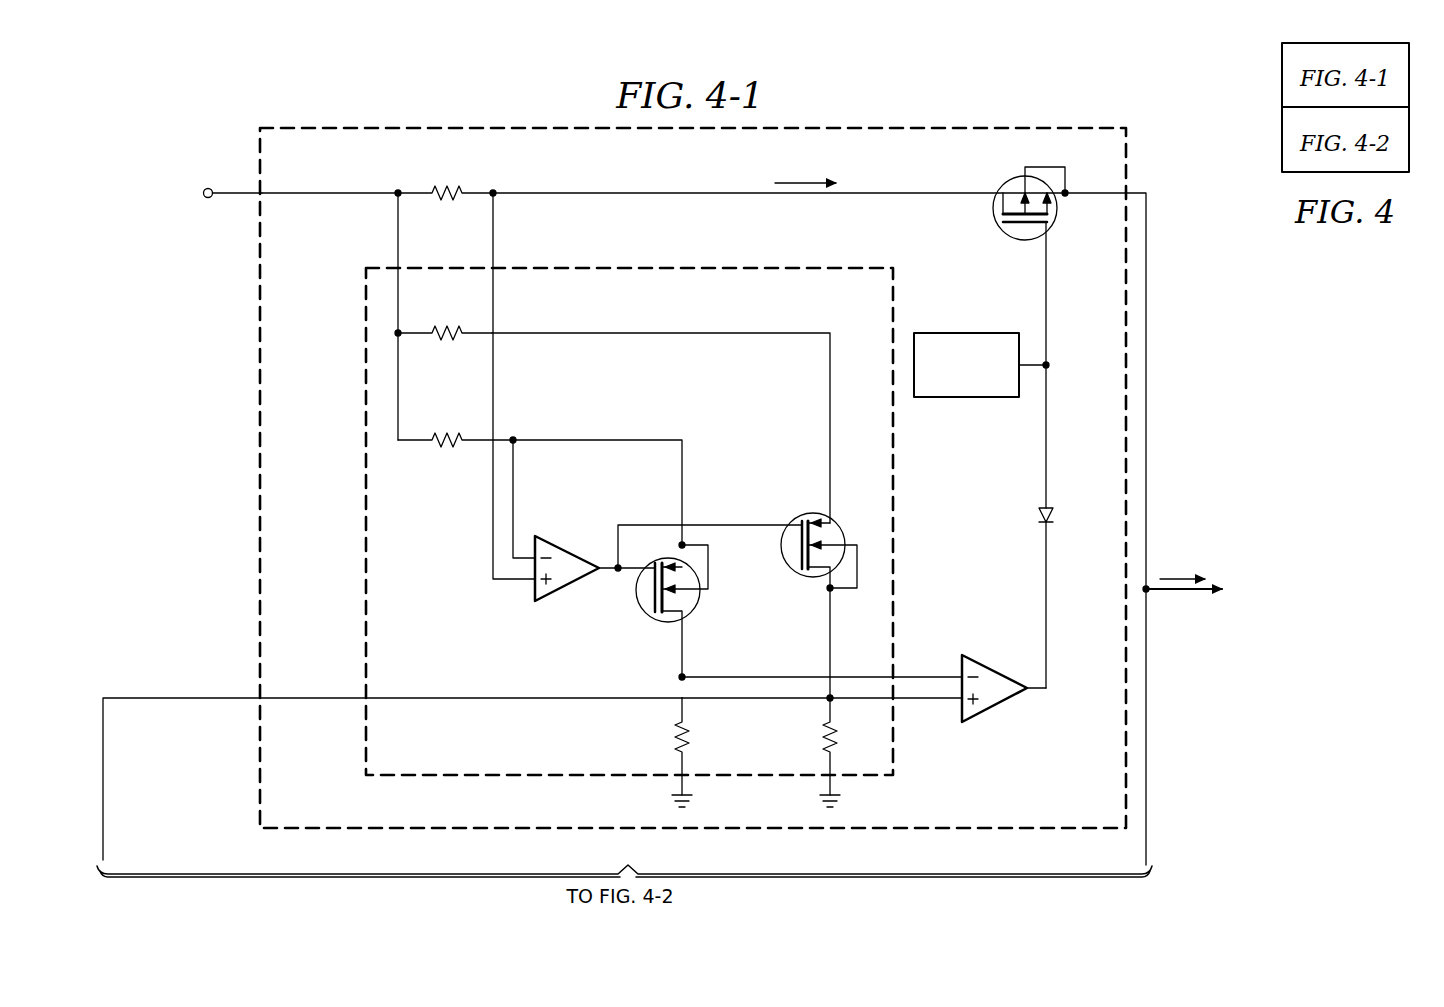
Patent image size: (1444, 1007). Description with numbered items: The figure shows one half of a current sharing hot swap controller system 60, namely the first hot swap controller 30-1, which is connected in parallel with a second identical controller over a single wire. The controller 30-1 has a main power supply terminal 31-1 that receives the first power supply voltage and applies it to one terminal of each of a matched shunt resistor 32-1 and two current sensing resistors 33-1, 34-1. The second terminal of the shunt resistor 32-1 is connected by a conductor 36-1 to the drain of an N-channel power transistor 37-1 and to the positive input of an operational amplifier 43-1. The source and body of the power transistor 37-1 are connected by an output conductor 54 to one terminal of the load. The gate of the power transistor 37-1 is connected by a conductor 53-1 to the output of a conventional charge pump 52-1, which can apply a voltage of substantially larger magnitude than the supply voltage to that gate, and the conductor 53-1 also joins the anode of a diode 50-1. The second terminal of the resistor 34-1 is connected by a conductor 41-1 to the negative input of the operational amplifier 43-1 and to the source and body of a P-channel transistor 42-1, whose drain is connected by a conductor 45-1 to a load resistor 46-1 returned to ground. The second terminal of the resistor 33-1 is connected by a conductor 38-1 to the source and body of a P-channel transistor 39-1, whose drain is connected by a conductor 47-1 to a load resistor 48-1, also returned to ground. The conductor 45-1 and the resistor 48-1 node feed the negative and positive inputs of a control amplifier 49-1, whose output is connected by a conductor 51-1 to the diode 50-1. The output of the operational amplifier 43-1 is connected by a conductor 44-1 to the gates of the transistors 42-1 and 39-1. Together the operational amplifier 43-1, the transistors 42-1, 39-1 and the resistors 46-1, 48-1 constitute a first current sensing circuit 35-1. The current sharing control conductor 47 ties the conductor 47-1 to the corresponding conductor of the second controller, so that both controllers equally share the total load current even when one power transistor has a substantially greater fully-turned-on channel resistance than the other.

The first hot swap controller 30-1 is at (258, 397).
The main power supply terminal 31-1 is at (228, 192).
The shunt resistor 32-1 is at (447, 200).
The current sensing resistor 33-1 is at (447, 340).
The current sensing resistor 34-1 is at (445, 447).
The first current sensing circuit 35-1 is at (364, 508).
The conductor 36-1 is at (700, 192).
The N-channel power transistor 37-1 is at (993, 208).
The conductor 38-1 is at (640, 332).
The P-channel transistor 39-1 is at (796, 576).
The conductor 41-1 is at (598, 439).
The P-channel transistor 42-1 is at (637, 597).
The operational amplifier 43-1 is at (568, 546).
The conductor 44-1 is at (716, 524).
The conductor 45-1 is at (735, 675).
The load resistor 46-1 is at (676, 735).
The current sharing control conductor 47 is at (182, 700).
The conductor 47-1 is at (482, 697).
The load resistor 48-1 is at (822, 733).
The control amplifier 49-1 is at (997, 707).
The diode 50-1 is at (1036, 516).
The conductor 51-1 is at (1040, 606).
The charge pump 52-1 is at (966, 398).
The conductor 53-1 is at (1040, 278).
The output conductor 54 is at (1170, 593).
The current sharing hot swap controller system 60 is at (1206, 362).